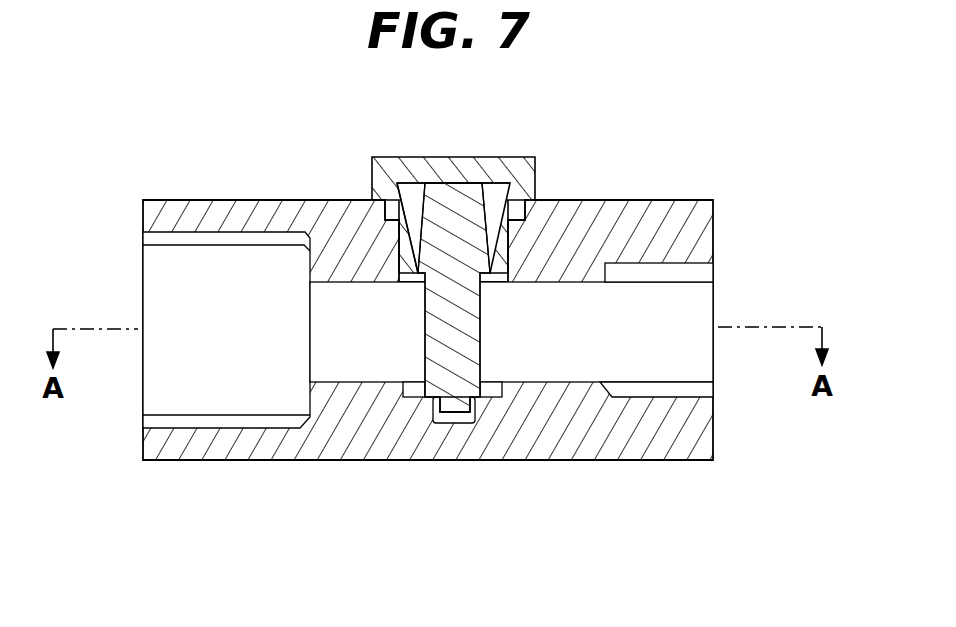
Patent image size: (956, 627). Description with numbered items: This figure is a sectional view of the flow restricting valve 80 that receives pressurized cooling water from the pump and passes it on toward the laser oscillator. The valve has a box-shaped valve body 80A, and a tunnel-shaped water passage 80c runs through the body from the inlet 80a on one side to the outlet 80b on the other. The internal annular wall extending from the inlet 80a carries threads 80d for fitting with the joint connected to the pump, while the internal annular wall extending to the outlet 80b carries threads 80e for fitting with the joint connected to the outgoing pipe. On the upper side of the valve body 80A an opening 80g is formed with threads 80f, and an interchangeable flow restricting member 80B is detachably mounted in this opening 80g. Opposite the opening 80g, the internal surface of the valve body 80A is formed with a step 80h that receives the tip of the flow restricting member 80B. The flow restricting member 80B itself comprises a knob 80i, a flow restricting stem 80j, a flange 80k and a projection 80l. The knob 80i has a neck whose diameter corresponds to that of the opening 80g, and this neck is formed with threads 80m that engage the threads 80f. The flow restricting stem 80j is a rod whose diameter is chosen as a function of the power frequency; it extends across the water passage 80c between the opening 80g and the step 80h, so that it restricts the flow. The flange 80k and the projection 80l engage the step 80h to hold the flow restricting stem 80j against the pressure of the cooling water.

The flow restricting valve 80 is at (618, 197).
The valve body 80A is at (290, 200).
The interchangeable flow restricting member 80B is at (484, 146).
The inlet 80a is at (172, 284).
The outlet 80b is at (693, 355).
The water passage 80c is at (343, 372).
The threads 80d is at (225, 421).
The threads 80e is at (665, 282).
The threads 80f is at (500, 200).
The opening 80g is at (396, 190).
The step 80h is at (450, 418).
The knob 80i is at (438, 157).
The flow restricting stem 80j is at (476, 312).
The flange 80k is at (487, 383).
The projection 80l is at (472, 404).
The threads 80m is at (393, 245).